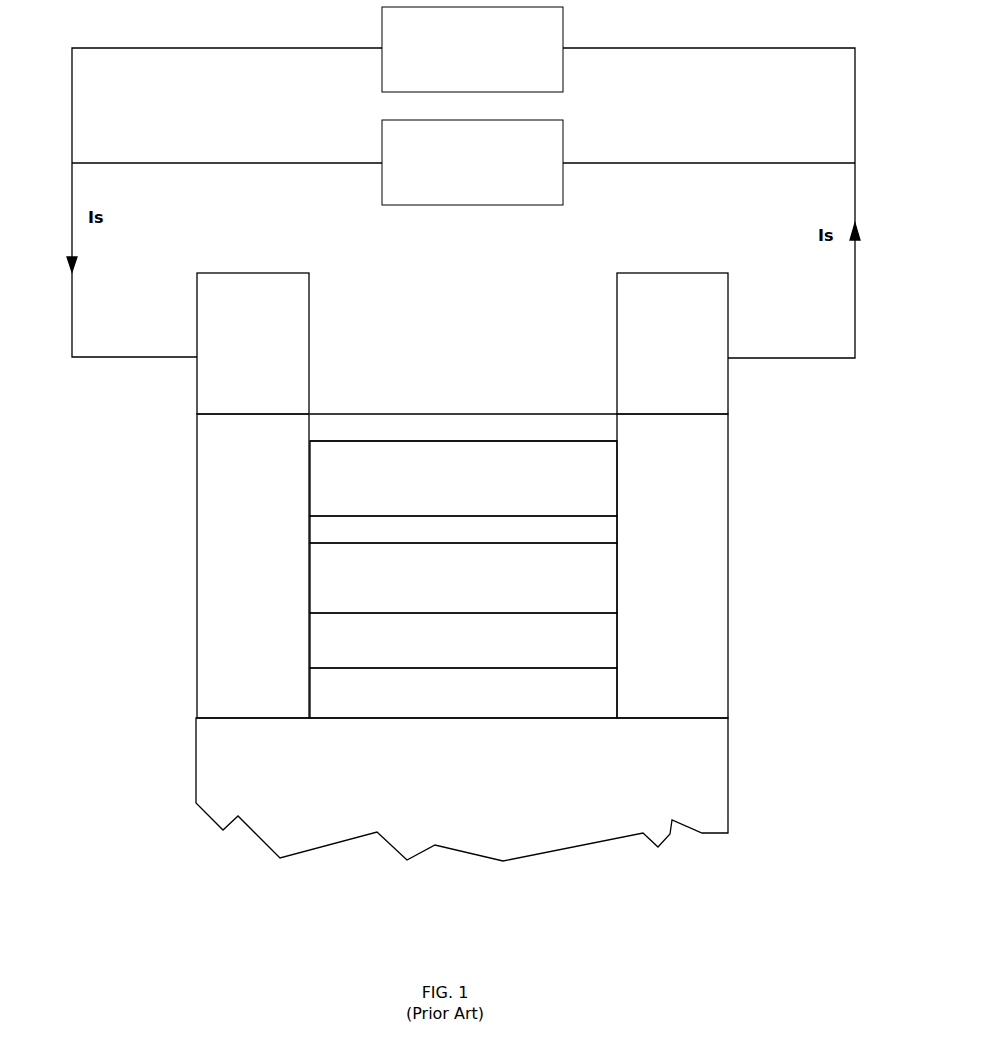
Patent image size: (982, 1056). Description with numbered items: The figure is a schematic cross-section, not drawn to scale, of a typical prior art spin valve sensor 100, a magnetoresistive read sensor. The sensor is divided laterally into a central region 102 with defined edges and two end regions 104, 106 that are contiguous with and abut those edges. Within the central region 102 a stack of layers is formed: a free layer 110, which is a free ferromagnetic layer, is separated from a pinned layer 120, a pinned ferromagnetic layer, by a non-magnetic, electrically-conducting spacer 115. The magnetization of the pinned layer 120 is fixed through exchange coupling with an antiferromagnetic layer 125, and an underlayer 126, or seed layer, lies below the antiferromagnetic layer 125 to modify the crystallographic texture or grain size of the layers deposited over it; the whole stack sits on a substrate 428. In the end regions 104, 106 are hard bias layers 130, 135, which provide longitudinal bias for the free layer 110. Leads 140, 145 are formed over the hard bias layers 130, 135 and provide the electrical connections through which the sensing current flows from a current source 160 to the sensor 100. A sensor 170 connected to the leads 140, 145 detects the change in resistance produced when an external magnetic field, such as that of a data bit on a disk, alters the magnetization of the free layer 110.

The spin valve sensor 100 is at (291, 924).
The central region 102 is at (617, 260).
The end region 104 is at (310, 259).
The end region 106 is at (728, 262).
The free layer 110 is at (592, 476).
The spacer 115 is at (600, 521).
The pinned layer 120 is at (605, 585).
The antiferromagnetic (AFM) layer 125 is at (602, 636).
The underlayer 126 is at (602, 686).
The hard bias layer 130 is at (252, 705).
The hard bias layer 135 is at (700, 707).
The lead 140 is at (197, 388).
The lead 145 is at (728, 390).
The current source 160 is at (382, 133).
The sensor 170 is at (563, 78).
The substrate 428 is at (700, 818).